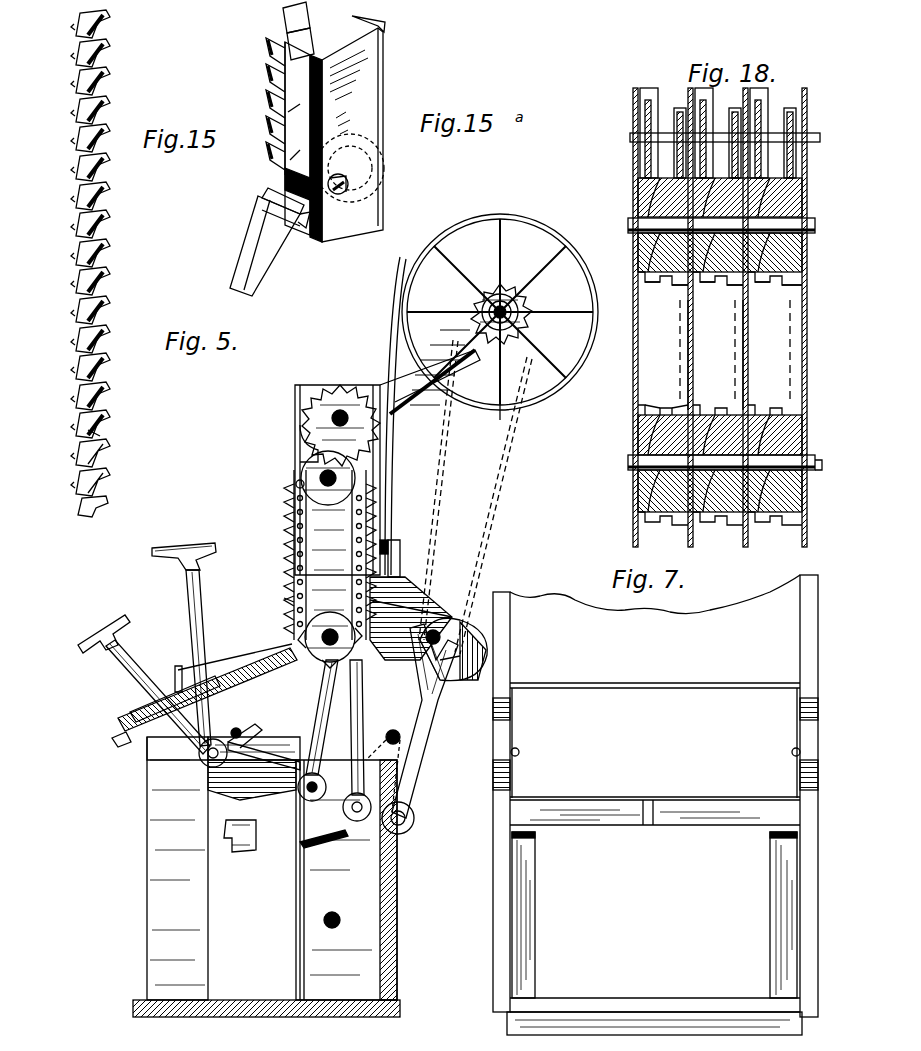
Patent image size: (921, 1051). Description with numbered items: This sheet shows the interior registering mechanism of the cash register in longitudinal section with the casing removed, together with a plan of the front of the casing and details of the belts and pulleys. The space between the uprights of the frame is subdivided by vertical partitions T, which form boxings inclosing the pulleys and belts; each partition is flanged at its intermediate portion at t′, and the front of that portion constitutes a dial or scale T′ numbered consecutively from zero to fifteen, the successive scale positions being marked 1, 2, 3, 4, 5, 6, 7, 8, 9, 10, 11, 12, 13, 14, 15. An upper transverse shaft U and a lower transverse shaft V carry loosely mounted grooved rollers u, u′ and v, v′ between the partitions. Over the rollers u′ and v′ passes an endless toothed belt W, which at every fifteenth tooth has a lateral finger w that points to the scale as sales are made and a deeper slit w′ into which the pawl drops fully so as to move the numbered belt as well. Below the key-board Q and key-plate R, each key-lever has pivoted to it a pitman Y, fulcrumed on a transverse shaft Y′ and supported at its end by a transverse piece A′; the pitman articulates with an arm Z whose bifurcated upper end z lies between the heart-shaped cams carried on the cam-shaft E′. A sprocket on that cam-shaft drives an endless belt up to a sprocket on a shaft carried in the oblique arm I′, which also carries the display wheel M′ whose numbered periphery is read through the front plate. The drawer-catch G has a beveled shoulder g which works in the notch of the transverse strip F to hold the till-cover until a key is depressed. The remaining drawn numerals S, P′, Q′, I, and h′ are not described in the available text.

In FIG. 15, the endless toothed belt W is at (77, 270).
In FIG. 15A, the endless toothed belt W is at (260, 104).
In FIG. 5, the endless toothed belt W is at (296, 542).
In FIG. 15, the deep slit w′ is at (100, 436).
In FIG. 15, the chain tooth 1 is at (99, 24).
In FIG. 15, the chain tooth 2 is at (99, 53).
In FIG. 15, the chain tooth 3 is at (99, 81).
In FIG. 15, the chain tooth 4 is at (99, 110).
In FIG. 15, the chain tooth 5 is at (99, 138).
In FIG. 15, the chain tooth 6 is at (99, 167).
In FIG. 15, the chain tooth 7 is at (99, 196).
In FIG. 15, the chain tooth 8 is at (99, 224).
In FIG. 15, the chain tooth 9 is at (99, 253).
In FIG. 15, the chain tooth 10 is at (102, 281).
In FIG. 15, the chain tooth 11 is at (102, 310).
In FIG. 15, the chain tooth 12 is at (102, 339).
In FIG. 15A, the chain tooth 12 is at (296, 17).
In FIG. 15, the chain tooth 13 is at (102, 367).
In FIG. 15A, the chain tooth 13 is at (300, 44).
In FIG. 15, the chain tooth 14 is at (102, 396).
In FIG. 15, the chain tooth 15 is at (102, 424).
In FIG. 15A, the vertical partition T is at (334, 135).
In FIG. 5, the vertical partition T is at (632, 378).
In FIG. 15A, the dial or scale T′ is at (380, 28).
In FIG. 5, the dial or scale T′ is at (252, 762).
In FIG. 18, the dial or scale T′ is at (686, 340).
In FIG. 15A, the lateral finger w is at (296, 101).
In FIG. 5, the lateral finger w is at (298, 472).
In FIG. 15A, the intermediate flange t′ is at (295, 124).
In FIG. 15A, the grooved roller v′ is at (352, 168).
In FIG. 18, the grooved roller v′ is at (733, 403).
In FIG. 15A, the lower transverse shaft V is at (348, 200).
In FIG. 5, the lower transverse shaft V is at (400, 578).
In FIG. 18, the lower transverse shaft V is at (812, 455).
In FIG. 5, the transverse piece A′ is at (388, 900).
In FIG. 5, the pitman Y is at (272, 836).
In FIG. 5, the transverse shaft Y′ is at (329, 841).
In FIG. 5, the bed h′ is at (254, 725).
In FIG. 5, the key-plate R is at (228, 664).
In FIG. 5, the key-board Q is at (140, 708).
In FIG. 5, the beveled shoulder g is at (112, 740).
In FIG. 5, the drawer-catch G is at (150, 744).
In FIG. 5, the lever S is at (188, 548).
In FIG. 5, the frame plate P′ is at (390, 486).
In FIG. 5, the connecting rod Q′ is at (430, 416).
In FIG. 5, the upper transverse shaft U is at (334, 476).
In FIG. 18, the upper transverse shaft U is at (728, 317).
In FIG. 5, the grooved roller v is at (295, 598).
In FIG. 18, the grooved roller v is at (705, 403).
In FIG. 5, the arm Z is at (378, 729).
In FIG. 5, the bifurcated end z is at (432, 688).
In FIG. 5, the transverse strip F is at (462, 632).
In FIG. 5, the cam-shaft E′ is at (452, 617).
In FIG. 5, the wheel M′ is at (507, 312).
In FIG. 5, the arm I′ is at (446, 392).
In FIG. 7, the side guide I is at (526, 912).
In FIG. 18, the grooved roller u is at (707, 406).
In FIG. 18, the grooved roller u′ is at (735, 408).